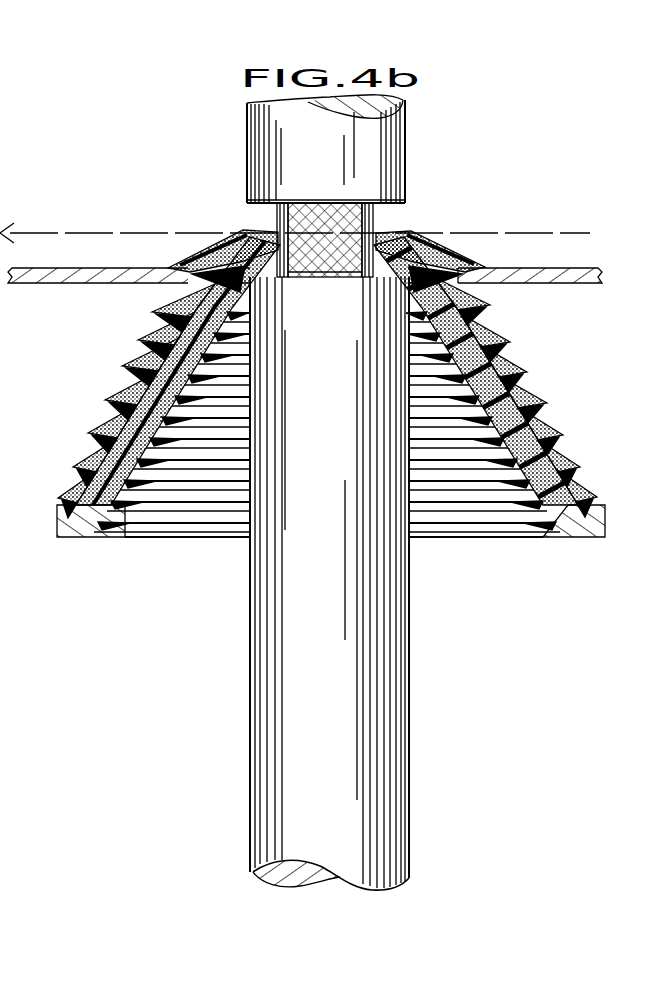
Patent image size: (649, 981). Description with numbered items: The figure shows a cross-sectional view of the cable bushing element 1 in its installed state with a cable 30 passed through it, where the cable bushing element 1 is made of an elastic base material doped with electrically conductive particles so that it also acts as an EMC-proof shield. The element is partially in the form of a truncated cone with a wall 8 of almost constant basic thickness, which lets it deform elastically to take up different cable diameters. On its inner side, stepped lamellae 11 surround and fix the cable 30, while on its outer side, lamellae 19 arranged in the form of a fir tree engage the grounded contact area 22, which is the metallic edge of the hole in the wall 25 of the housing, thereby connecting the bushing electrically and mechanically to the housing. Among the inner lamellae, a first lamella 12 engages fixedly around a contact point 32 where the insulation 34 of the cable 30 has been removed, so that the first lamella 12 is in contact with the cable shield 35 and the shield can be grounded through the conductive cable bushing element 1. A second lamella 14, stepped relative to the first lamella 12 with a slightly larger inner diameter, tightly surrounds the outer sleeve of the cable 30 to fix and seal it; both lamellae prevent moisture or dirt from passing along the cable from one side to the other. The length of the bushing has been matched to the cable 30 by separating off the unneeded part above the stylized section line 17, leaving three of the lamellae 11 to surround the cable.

The cable bushing element 1 is at (457, 603).
The wall 8 is at (520, 378).
The lamellae 11 is at (168, 403).
The first lamella 12 is at (262, 226).
The second lamella 14 is at (425, 240).
The section line 17 is at (118, 230).
The lamellae 19 is at (190, 258).
The contact area 22 is at (488, 260).
The wall 25 is at (548, 268).
The cable 30 is at (295, 676).
The contact point 32 is at (277, 224).
The insulation 34 is at (412, 152).
The cable shield 35 is at (318, 268).